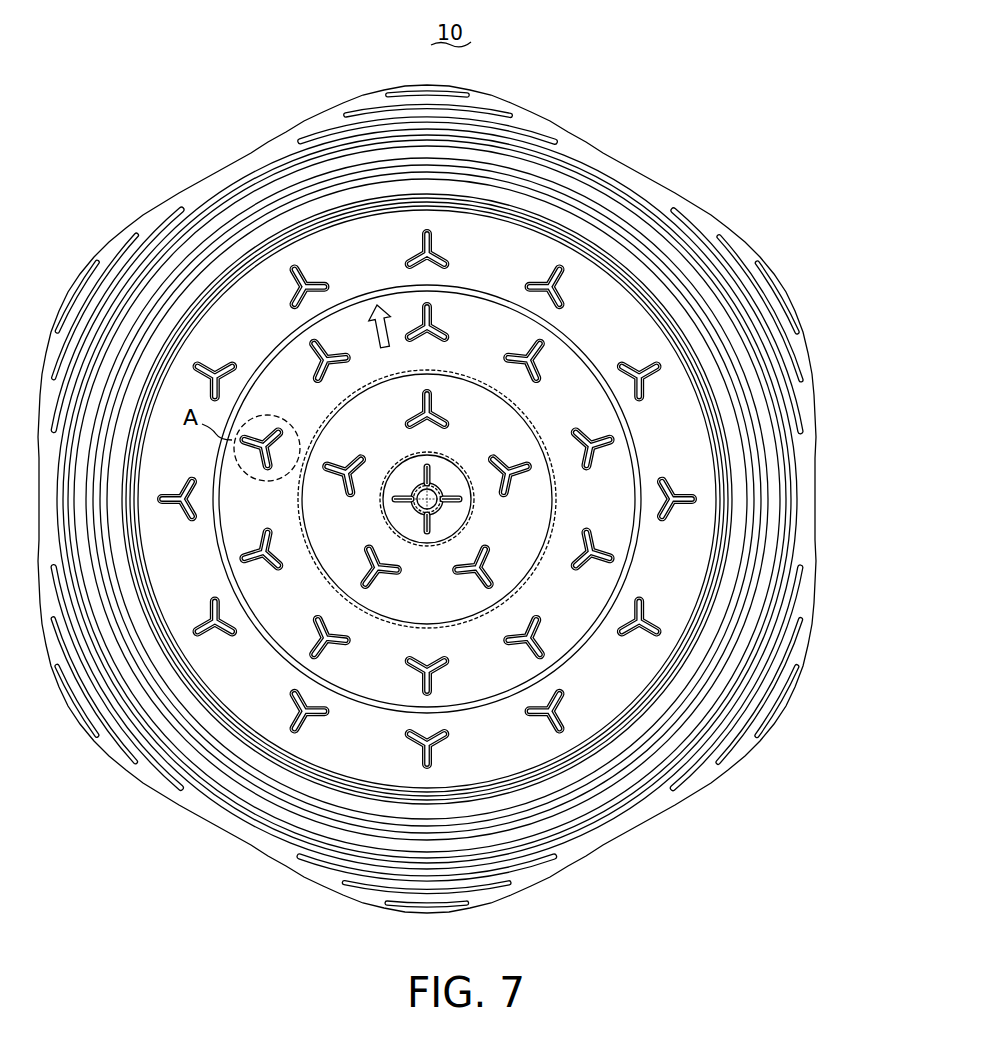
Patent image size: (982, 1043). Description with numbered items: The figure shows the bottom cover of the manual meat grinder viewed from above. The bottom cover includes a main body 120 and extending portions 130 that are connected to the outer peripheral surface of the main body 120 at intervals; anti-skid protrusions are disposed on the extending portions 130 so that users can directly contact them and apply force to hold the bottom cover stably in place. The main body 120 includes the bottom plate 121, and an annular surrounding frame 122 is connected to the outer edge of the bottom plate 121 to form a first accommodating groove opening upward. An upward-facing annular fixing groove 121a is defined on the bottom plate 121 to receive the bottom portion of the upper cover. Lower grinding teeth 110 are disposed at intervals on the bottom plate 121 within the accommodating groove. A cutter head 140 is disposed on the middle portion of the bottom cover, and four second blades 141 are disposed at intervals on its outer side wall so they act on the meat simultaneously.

The lower grinding teeth 110 is at (432, 313).
The main body 120 is at (780, 208).
The bottom plate 121 is at (590, 283).
The annular fixing groove 121a is at (760, 488).
The annular surrounding frame 122 is at (657, 310).
The extending portions 130 is at (762, 307).
The cutter head 140 is at (437, 490).
The second blades 141 is at (422, 478).